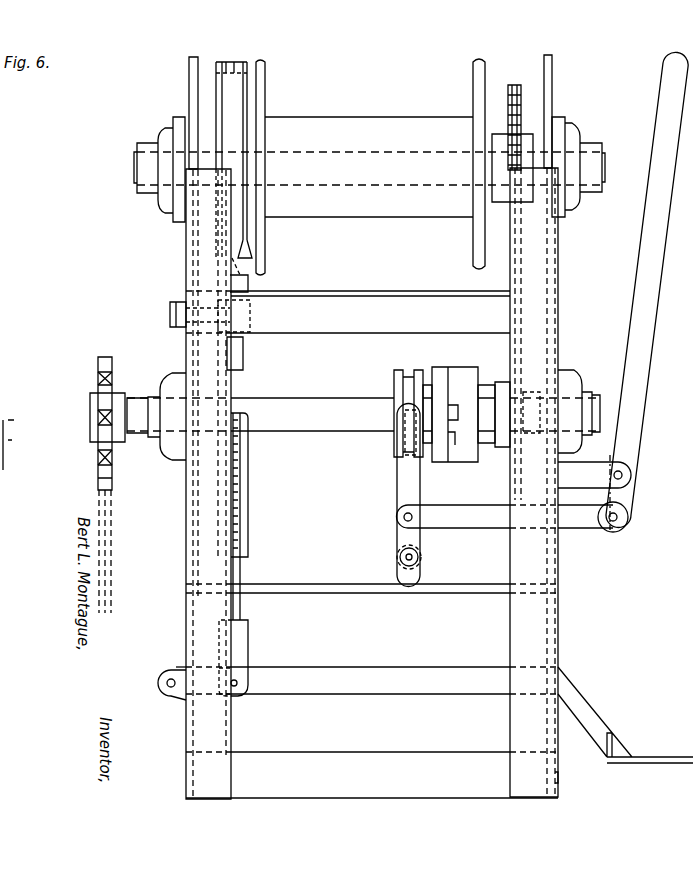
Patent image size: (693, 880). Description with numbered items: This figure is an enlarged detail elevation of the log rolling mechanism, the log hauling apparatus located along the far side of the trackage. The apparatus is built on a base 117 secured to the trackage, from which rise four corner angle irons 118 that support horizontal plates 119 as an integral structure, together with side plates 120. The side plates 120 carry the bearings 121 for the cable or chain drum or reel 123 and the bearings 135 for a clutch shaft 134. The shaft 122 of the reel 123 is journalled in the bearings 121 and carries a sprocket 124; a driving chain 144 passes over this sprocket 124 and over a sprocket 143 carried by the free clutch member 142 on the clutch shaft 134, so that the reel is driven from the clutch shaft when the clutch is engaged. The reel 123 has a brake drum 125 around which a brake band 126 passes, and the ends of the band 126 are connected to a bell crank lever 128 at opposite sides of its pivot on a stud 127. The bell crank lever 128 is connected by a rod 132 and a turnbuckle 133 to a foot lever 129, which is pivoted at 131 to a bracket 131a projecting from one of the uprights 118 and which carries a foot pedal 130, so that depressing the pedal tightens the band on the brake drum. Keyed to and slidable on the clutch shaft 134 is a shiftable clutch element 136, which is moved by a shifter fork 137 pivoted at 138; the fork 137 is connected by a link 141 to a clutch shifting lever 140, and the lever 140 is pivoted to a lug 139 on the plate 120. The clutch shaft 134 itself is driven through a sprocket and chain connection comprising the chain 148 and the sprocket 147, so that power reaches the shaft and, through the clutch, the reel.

The base 117 is at (400, 748).
The corner angle irons 118 is at (232, 722).
The horizontal plates 119 is at (339, 291).
The side plates 120 is at (190, 77).
The bearings 121 is at (160, 205).
The shaft 122 is at (137, 168).
The cable or chain drum or reel 123 is at (327, 118).
The sprocket 124 is at (509, 100).
The brake drum 125 is at (250, 87).
The brake band 126 is at (237, 137).
The stud 127 is at (170, 312).
The bell crank lever 128 is at (243, 352).
The foot lever 129 is at (423, 667).
The foot pedal 130 is at (637, 758).
The pivot 131 is at (171, 695).
The bracket 131a is at (186, 666).
The rod 132 is at (240, 572).
The turnbuckle 133 is at (248, 529).
The clutch shaft 134 is at (323, 431).
The bearings 135 is at (168, 445).
The shiftable clutch element 136 is at (437, 367).
The shifter fork 137 is at (397, 490).
The pivot 138 is at (418, 557).
The lug 139 is at (631, 470).
The clutch shifting lever 140 is at (640, 398).
The link 141 is at (582, 528).
The free clutch member 142 is at (460, 457).
The sprocket 143 is at (500, 452).
The driving chain 144 is at (517, 108).
The sprocket 147 is at (112, 375).
The chain 148 is at (112, 562).